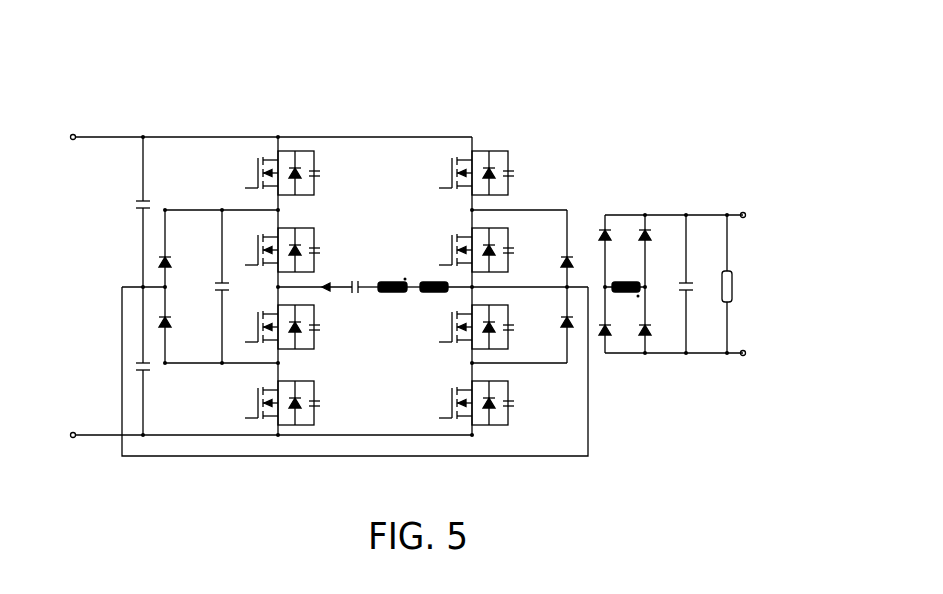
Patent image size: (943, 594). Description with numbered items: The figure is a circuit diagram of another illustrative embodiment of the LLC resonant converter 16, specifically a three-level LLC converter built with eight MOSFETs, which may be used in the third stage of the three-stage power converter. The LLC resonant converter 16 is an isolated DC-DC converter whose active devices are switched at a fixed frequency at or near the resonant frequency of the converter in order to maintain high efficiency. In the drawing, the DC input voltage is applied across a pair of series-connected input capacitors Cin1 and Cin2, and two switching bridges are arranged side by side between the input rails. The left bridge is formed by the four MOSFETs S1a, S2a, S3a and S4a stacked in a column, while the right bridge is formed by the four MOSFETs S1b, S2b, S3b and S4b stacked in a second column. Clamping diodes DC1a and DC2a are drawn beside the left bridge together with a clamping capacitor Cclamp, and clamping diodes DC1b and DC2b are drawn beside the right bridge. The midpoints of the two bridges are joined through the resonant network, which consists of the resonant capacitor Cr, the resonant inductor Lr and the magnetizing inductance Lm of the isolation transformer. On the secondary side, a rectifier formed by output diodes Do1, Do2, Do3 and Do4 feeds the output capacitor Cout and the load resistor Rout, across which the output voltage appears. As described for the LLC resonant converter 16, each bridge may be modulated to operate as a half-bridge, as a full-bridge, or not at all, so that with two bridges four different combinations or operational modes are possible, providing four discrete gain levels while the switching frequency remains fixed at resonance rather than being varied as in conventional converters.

The LLC resonant converter 16 is at (411, 112).
The switch S1a is at (274, 173).
The switch S2a is at (274, 250).
The switch S3a is at (274, 327).
The switch S4a is at (274, 403).
The switch S1b is at (467, 173).
The switch S2b is at (467, 250).
The switch S3b is at (467, 327).
The switch S4b is at (467, 403).
The input capacitor Cin1 is at (154, 212).
The input capacitor Cin2 is at (154, 361).
The clamp diode DC1a is at (177, 248).
The clamp diode DC2a is at (177, 325).
The clamp diode DC1b is at (550, 248).
The clamp diode DC2b is at (550, 325).
The clamp capacitor Cclamp is at (205, 286).
The resonant capacitor Cr is at (355, 280).
The resonant inductor Lr is at (434, 280).
The transformer magnetizing inductance Lm is at (392, 285).
The output diode Do1 is at (614, 235).
The output diode Do2 is at (614, 334).
The output diode Do3 is at (654, 235).
The output diode Do4 is at (655, 334).
The output capacitor Cout is at (694, 284).
The output load resistor Rout is at (741, 284).